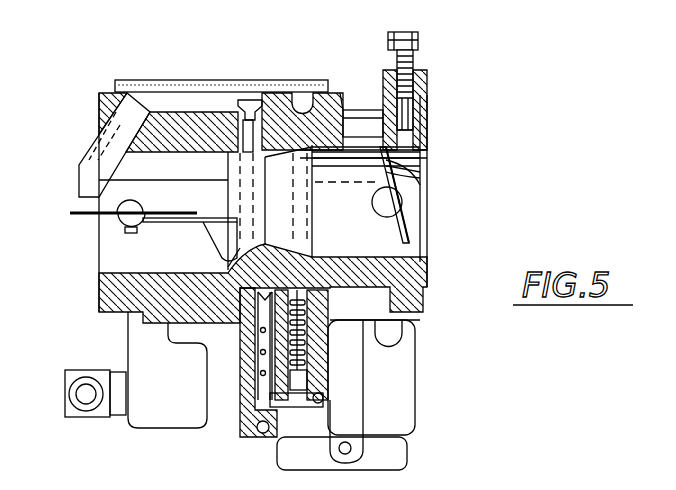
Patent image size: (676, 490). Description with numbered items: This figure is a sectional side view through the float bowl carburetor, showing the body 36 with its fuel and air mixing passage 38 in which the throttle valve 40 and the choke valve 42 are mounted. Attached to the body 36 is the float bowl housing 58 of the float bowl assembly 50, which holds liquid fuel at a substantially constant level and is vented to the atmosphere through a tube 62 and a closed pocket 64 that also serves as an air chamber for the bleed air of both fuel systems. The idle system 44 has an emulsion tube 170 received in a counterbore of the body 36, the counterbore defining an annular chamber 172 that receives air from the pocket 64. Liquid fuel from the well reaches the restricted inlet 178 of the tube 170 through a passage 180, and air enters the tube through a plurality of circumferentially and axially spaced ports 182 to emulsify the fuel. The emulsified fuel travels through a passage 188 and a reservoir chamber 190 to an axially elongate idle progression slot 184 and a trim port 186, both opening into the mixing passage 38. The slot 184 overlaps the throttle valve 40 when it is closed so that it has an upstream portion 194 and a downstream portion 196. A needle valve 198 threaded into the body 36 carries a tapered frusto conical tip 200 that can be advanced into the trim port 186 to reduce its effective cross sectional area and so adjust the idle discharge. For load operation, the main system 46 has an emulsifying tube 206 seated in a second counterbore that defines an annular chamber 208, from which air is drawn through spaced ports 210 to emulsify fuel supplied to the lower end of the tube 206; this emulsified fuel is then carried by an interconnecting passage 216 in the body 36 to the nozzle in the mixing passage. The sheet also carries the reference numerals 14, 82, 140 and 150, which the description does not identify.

The carburetor 14 is at (630, 0).
The body 36 is at (428, 285).
The fuel and air mixing passage 38 is at (116, 239).
The throttle valve 40 is at (408, 174).
The choke valve 42 is at (73, 212).
The idle system 44 is at (318, 374).
The main system 46 is at (257, 358).
The float bowl assembly 50 is at (392, 409).
The float bowl housing 58 is at (415, 425).
The tube 62 is at (93, 148).
The closed pocket 64 is at (166, 94).
The throttle shaft 82 is at (530, 0).
The throttle lever 140 is at (553, 0).
The link 150 is at (608, 0).
The emulsion tube 170 is at (308, 350).
The annular chamber 172 is at (308, 332).
The restricted inlet 178 is at (325, 373).
The passage 180 is at (252, 440).
The ports 182 is at (315, 300).
The idle progression slot 184 is at (378, 154).
The trim port 186 is at (418, 153).
The passage 188 is at (290, 92).
The reservoir chamber 190 is at (355, 115).
The upstream portion 194 is at (341, 95).
The downstream portion 196 is at (425, 171).
The needle valve 198 is at (392, 33).
The tapered frusto conical tip 200 is at (410, 135).
The emulsifying tube 206 is at (257, 343).
The annular chamber 208 is at (254, 322).
The ports 210 is at (260, 365).
The interconnecting passage 216 is at (232, 270).